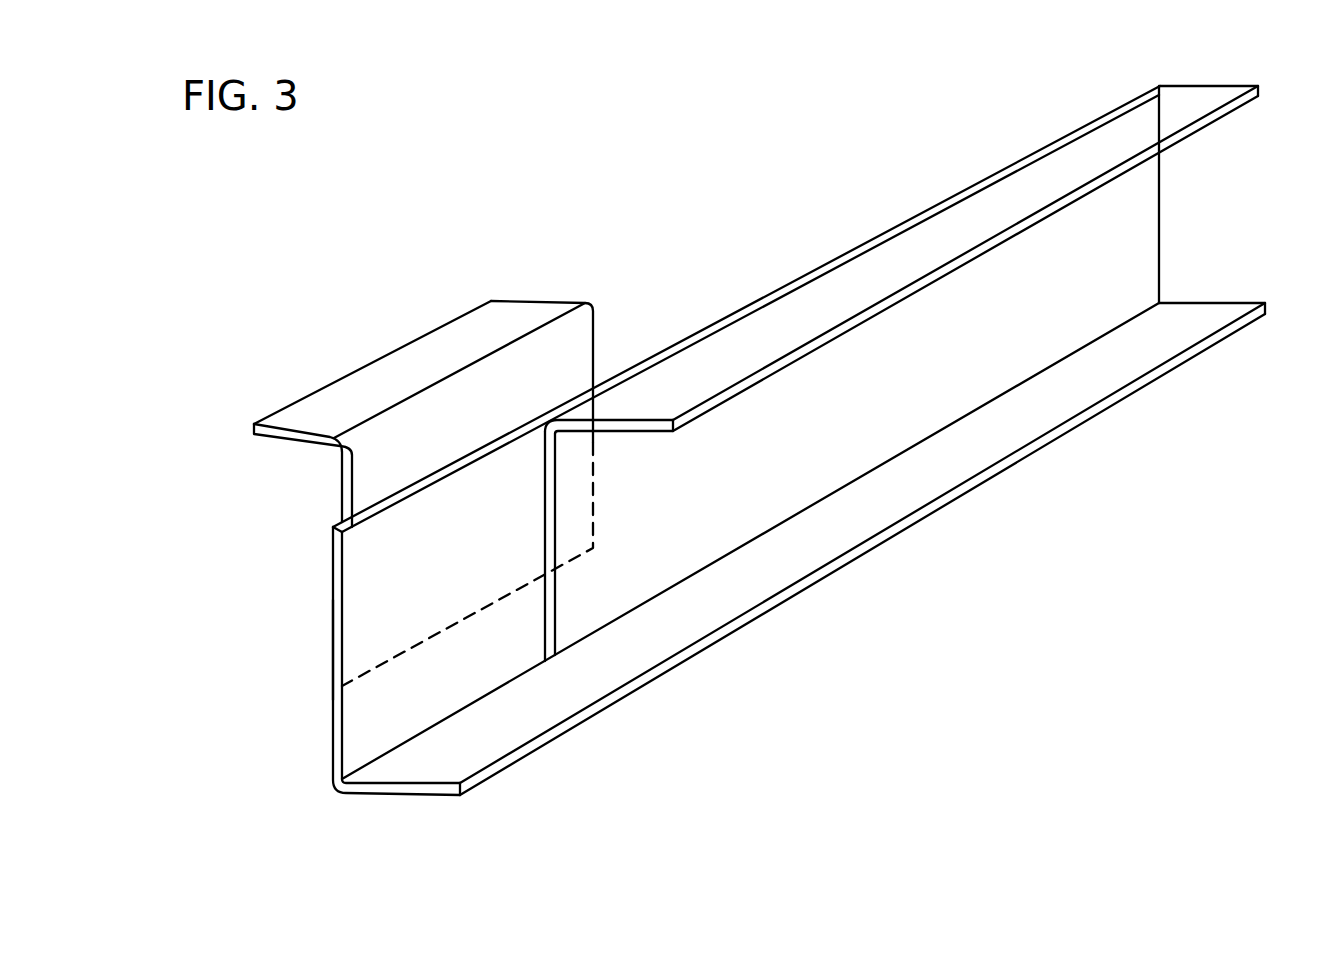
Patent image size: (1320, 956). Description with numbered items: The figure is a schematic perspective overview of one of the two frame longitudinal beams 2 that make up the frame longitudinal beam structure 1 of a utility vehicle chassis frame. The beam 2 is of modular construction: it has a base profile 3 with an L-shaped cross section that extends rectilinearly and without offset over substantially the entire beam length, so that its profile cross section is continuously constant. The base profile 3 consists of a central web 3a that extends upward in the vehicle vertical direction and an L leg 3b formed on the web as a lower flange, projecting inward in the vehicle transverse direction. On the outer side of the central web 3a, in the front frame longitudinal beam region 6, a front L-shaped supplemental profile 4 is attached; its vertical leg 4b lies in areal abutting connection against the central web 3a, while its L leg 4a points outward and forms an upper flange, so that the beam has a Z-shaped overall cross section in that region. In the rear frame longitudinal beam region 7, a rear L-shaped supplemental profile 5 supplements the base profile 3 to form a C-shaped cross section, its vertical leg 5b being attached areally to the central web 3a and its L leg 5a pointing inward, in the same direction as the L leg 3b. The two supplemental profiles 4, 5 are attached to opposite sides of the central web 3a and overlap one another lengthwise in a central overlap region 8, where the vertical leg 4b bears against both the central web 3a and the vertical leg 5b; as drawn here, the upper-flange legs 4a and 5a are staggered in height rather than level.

The frame longitudinal beam structure 1 is at (793, 160).
The frame longitudinal beam 2 is at (677, 316).
The base profile 3 is at (328, 768).
The central web 3a is at (333, 672).
The L leg 3b is at (545, 712).
The front L-shaped supplemental profile 4 is at (428, 332).
The L leg 4a is at (344, 400).
The vertical leg 4b is at (340, 487).
The rear L-shaped supplemental profile 5 is at (1101, 267).
The L leg 5a is at (831, 306).
The vertical leg 5b is at (710, 480).
The front frame longitudinal beam region 6 is at (289, 632).
The rear frame longitudinal beam region 7 is at (960, 172).
The overlap region 8 is at (590, 577).